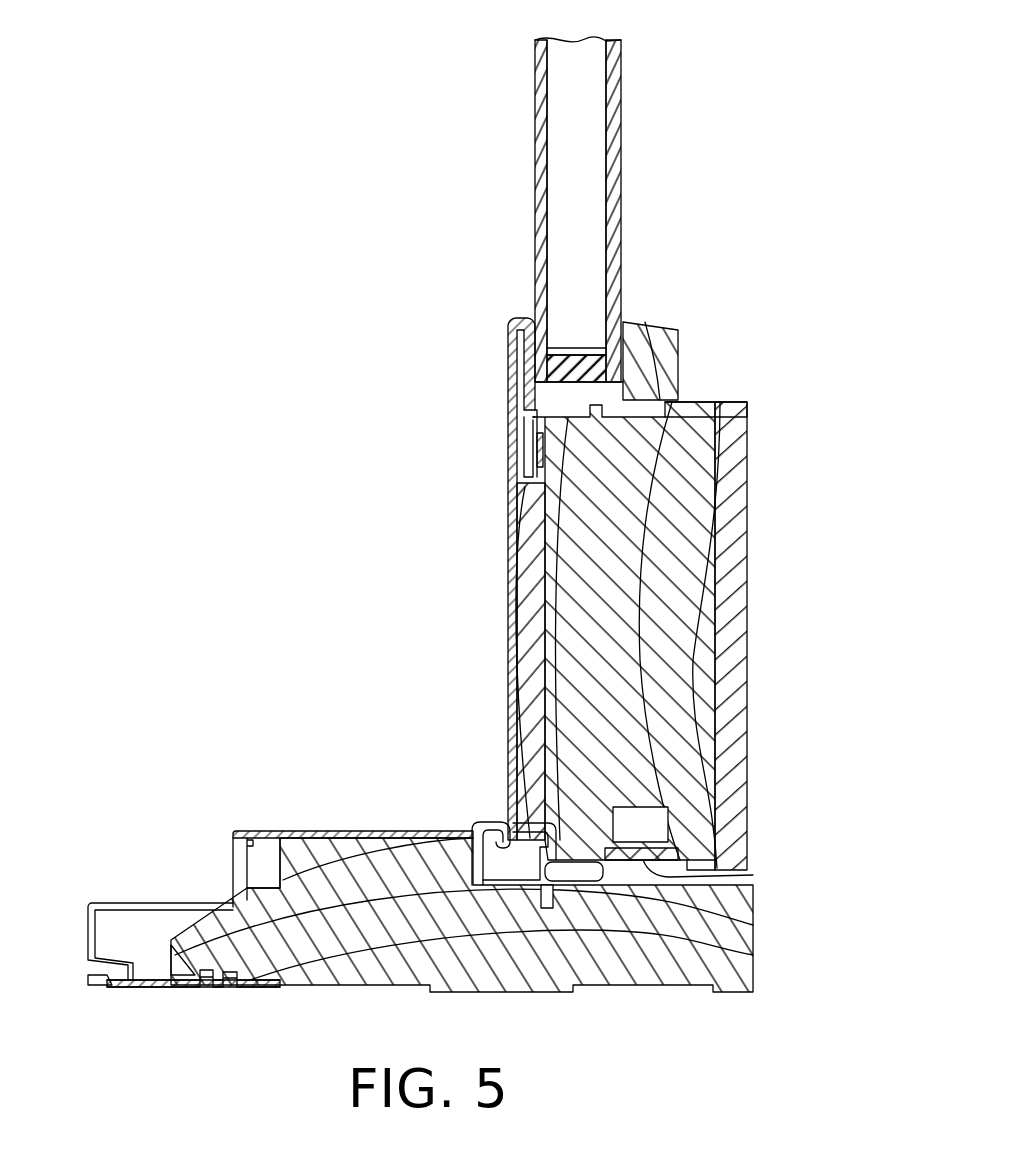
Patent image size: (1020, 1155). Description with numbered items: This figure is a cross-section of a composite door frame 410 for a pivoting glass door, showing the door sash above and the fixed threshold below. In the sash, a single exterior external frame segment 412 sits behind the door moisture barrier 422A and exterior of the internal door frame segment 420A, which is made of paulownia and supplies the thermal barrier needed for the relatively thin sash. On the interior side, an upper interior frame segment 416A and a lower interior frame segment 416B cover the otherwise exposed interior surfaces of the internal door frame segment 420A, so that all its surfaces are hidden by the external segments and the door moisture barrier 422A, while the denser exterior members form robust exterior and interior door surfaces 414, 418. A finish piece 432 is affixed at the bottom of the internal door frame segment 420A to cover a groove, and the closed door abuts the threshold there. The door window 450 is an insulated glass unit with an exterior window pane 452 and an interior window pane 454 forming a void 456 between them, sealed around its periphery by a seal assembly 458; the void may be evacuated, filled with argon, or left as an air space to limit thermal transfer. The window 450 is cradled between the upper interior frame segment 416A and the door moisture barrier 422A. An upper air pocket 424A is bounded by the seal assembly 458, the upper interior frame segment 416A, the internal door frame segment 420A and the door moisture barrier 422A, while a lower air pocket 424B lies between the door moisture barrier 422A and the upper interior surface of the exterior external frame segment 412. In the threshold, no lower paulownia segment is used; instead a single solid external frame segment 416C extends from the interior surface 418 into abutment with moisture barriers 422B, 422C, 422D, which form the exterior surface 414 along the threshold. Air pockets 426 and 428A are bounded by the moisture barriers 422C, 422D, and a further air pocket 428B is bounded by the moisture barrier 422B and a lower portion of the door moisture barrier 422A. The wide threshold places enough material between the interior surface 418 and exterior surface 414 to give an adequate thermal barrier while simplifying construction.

The composite door frame 410 is at (272, 166).
The exterior external frame segment 412 is at (528, 660).
The exterior surface 414 is at (510, 580).
The upper interior frame segment 416A is at (655, 330).
The lower interior frame segment 416B is at (740, 557).
The solid external frame segment 416C is at (735, 955).
The interior surface 418 is at (805, 474).
The internal door frame segment 420A is at (700, 407).
The door moisture barrier 422A is at (506, 365).
The moisture barrier 422B is at (480, 822).
The moisture barrier 422C is at (333, 830).
The moisture barrier 422D is at (127, 903).
The upper air pocket 424A is at (530, 398).
The lower air pocket 424B is at (518, 444).
The air pocket 426 is at (156, 928).
The air pocket 428A is at (265, 848).
The air pocket 428B is at (511, 875).
The finish piece 432 is at (700, 872).
The door window 450 is at (505, 113).
The exterior window pane 452 is at (540, 228).
The interior window pane 454 is at (613, 135).
The void 456 is at (578, 54).
The seal assembly 458 is at (580, 340).